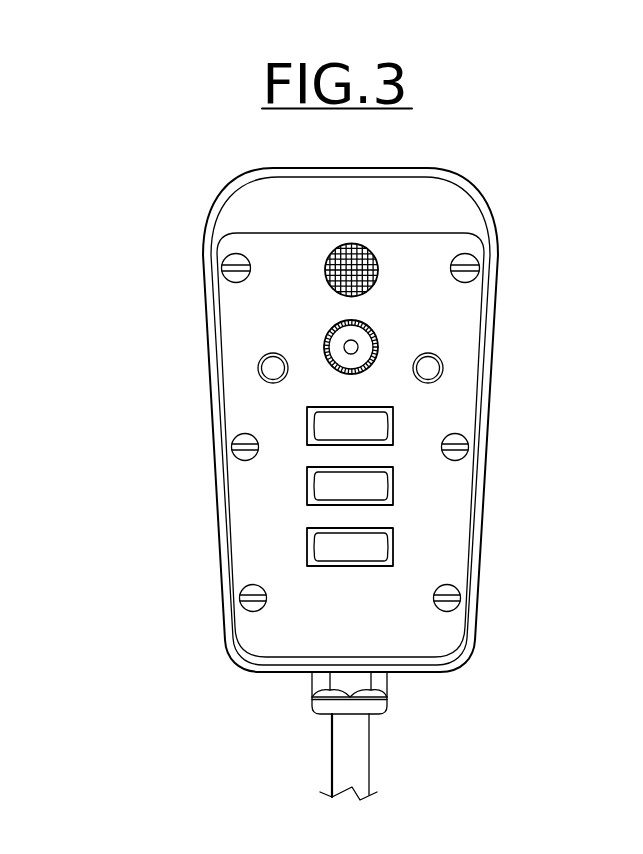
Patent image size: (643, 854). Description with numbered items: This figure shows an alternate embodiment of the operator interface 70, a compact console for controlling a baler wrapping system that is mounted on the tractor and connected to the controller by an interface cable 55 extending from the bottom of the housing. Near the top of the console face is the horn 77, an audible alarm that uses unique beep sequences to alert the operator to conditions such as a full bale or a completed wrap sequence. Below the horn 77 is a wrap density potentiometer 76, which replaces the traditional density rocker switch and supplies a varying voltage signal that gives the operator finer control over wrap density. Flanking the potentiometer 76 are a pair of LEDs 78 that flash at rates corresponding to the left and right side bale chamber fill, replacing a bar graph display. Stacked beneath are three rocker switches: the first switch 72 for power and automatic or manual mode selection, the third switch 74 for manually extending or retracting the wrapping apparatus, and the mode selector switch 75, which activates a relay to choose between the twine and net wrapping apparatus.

The operator interface 70 is at (474, 156).
The horn 77 is at (363, 255).
The wrap density potentiometer 76 is at (377, 337).
The LEDs 78 is at (262, 368).
The first switch 72 is at (390, 427).
The third switch 74 is at (388, 490).
The mode selector switch 75 is at (390, 545).
The interface cable 55 is at (357, 747).